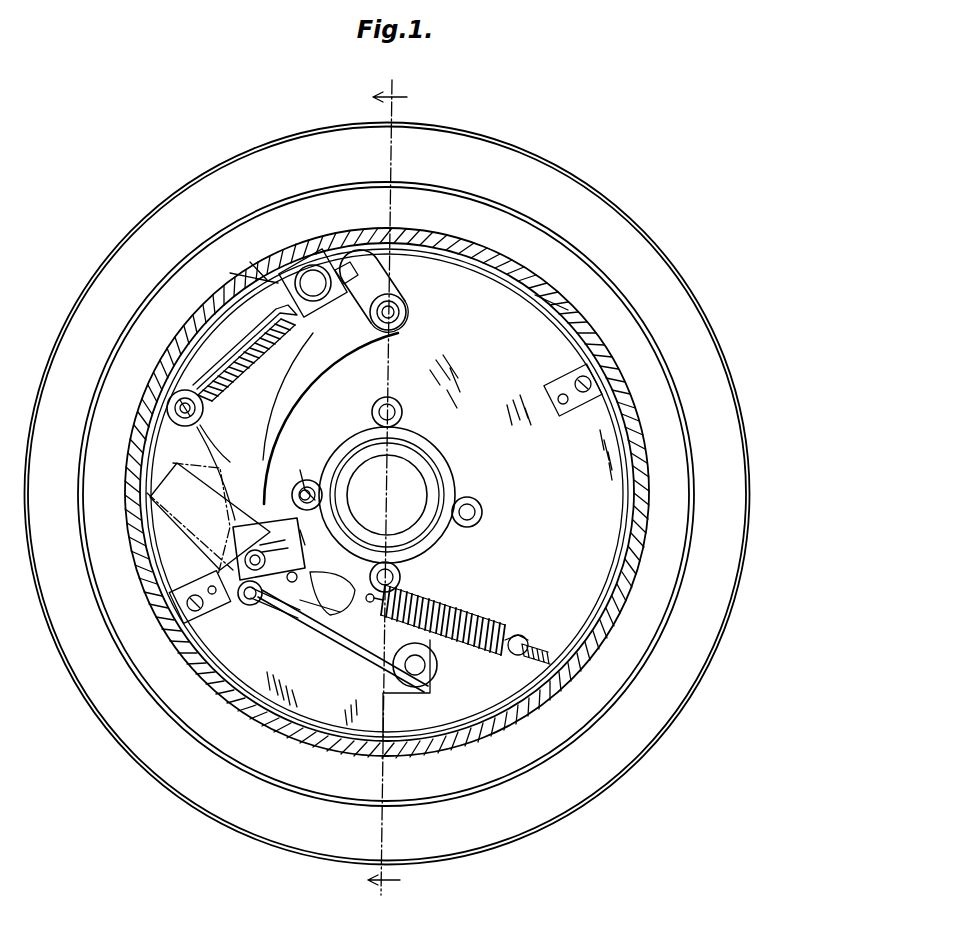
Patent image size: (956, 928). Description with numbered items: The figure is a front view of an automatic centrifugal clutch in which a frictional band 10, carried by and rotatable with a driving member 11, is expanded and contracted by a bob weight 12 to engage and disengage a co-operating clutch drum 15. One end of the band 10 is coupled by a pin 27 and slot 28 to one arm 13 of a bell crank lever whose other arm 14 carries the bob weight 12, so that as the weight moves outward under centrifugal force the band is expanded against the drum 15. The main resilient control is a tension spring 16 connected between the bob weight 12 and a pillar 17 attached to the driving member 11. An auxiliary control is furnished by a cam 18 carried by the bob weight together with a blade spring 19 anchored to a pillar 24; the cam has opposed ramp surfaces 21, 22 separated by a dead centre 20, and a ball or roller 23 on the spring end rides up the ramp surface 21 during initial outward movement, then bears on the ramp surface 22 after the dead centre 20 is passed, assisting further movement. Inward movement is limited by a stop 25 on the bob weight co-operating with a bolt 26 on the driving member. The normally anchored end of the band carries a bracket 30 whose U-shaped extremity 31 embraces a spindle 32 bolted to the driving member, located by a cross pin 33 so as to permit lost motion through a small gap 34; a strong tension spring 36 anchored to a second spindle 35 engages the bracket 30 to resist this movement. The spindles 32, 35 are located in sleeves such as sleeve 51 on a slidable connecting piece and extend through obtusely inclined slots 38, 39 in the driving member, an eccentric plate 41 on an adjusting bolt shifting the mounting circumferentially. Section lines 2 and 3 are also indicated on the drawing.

The section line 2- 2 is at (387, 491).
The section line 3- 3 is at (178, 442).
The frictional band 10 is at (557, 325).
The driving member 11 is at (582, 346).
The bob weight 12 is at (308, 572).
The arm of bell crank lever 13 is at (407, 292).
The arm of bell crank lever 14 is at (318, 373).
The clutch drum 15 is at (553, 293).
The tension spring 16 is at (453, 613).
The pillar 17 is at (540, 640).
The cam 18 is at (272, 608).
The blade spring 19 is at (360, 652).
The dead centre 20 is at (330, 614).
The ramp surface 21 is at (310, 602).
The ramp surface 22 is at (345, 612).
The ball or roller 23 is at (247, 606).
The pillar 24 is at (398, 694).
The stop 25 is at (313, 463).
The bolt 26 is at (338, 462).
The pin 27 is at (405, 280).
The slot 28 is at (398, 234).
The bracket 30 is at (236, 271).
The U-shaped extremity 31 is at (298, 270).
The spindle 32 is at (392, 346).
The cross pin 33 is at (326, 263).
The gap 34 is at (312, 263).
The second spindle 35 is at (346, 273).
The tension spring 36 is at (228, 410).
The slot 38 is at (243, 263).
The slot 39 is at (168, 425).
The eccentric plate 41 is at (238, 388).
The sleeve 51 is at (180, 398).